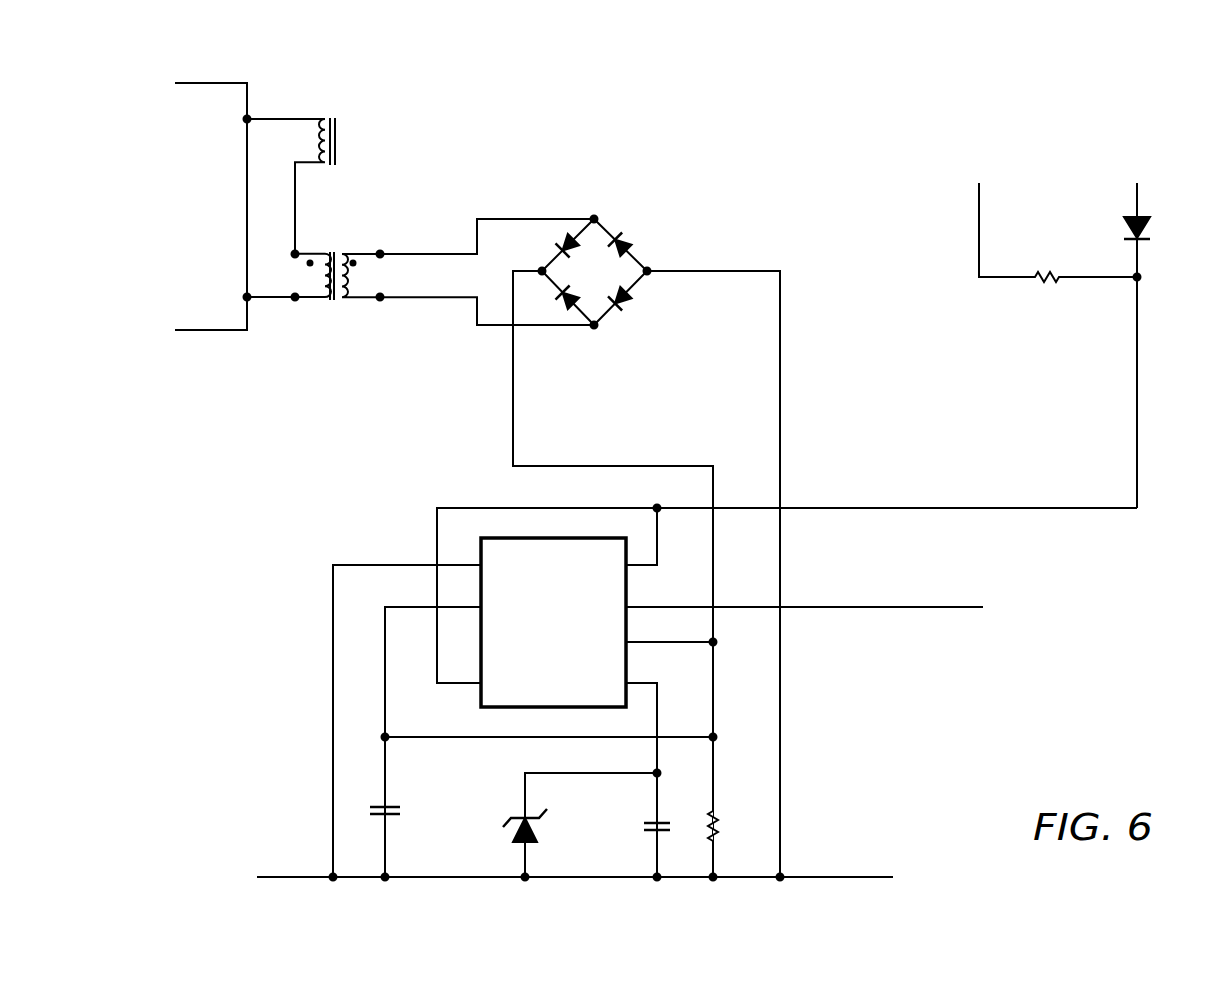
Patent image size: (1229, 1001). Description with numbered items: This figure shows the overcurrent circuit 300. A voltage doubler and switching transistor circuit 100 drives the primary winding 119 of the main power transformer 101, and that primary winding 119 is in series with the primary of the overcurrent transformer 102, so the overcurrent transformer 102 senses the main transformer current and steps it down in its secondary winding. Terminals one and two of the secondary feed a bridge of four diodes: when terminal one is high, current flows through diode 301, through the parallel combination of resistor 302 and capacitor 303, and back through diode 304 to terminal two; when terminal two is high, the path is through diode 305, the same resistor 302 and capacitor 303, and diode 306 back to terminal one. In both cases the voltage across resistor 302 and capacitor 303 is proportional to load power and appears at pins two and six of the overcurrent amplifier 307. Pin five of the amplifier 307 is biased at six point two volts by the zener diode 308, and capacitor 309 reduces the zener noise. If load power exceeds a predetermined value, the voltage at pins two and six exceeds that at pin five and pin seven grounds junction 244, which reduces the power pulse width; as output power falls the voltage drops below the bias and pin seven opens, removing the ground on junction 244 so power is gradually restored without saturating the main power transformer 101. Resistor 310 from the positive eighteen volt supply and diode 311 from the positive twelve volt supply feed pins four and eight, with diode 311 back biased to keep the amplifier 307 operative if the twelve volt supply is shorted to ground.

The voltage doubler and switching transistor circuit 100 is at (223, 83).
The main power transformer 101 is at (393, 161).
The primary winding of main power transformer 119 is at (313, 163).
The overcurrent transformer 102 is at (333, 252).
The overcurrent circuit 300 is at (668, 464).
The diode 301 is at (560, 232).
The diode 304 is at (630, 302).
The diode 305 is at (560, 296).
The diode 306 is at (622, 232).
The resistor 302 is at (722, 820).
The capacitor 303 is at (397, 800).
The overcurrent amplifier 307 is at (512, 708).
The zener diode 308 is at (512, 830).
The capacitor 309 is at (652, 832).
The resistor 310 is at (1047, 283).
The diode 311 is at (1145, 227).
The junction 244 is at (909, 620).